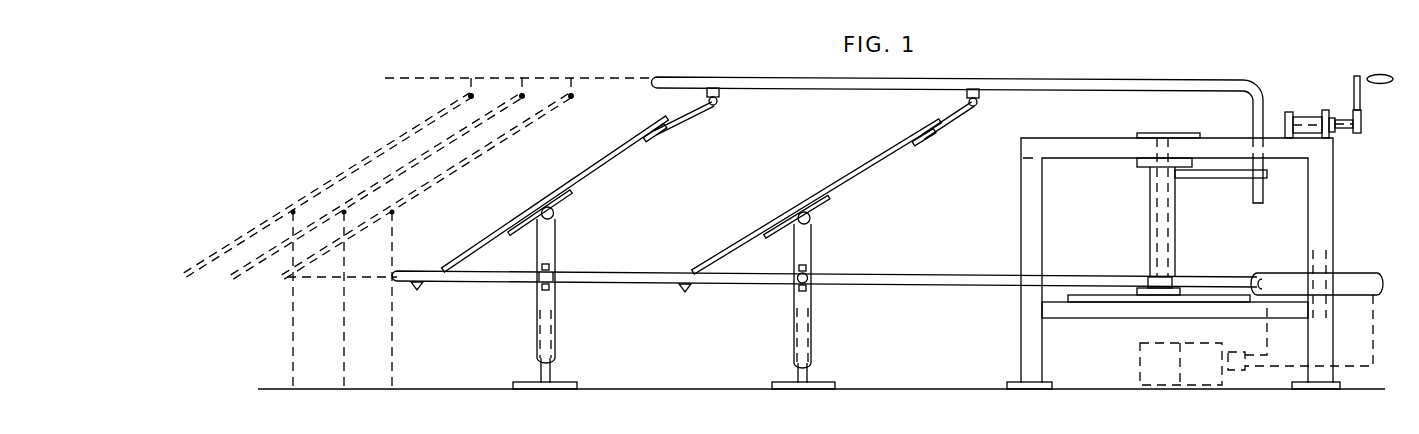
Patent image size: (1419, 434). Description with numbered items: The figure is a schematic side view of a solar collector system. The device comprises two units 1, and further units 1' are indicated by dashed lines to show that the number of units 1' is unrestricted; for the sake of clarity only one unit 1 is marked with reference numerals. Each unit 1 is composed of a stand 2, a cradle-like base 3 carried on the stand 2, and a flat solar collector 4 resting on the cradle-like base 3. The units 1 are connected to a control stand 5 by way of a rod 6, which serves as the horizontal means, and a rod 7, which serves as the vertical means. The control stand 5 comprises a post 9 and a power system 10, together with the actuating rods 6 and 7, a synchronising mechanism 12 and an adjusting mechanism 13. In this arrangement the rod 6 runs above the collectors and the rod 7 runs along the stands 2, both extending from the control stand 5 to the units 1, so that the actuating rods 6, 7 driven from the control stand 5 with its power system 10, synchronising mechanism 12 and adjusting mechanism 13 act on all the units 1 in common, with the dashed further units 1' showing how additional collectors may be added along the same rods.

The unit 1 is at (814, 306).
The further unit 1' is at (290, 306).
The stand 2 is at (810, 327).
The cradle-like base 3 is at (815, 218).
The flat solar collector 4 is at (758, 238).
The control stand 5 is at (1027, 340).
The rod 6 is at (1138, 84).
The rod 7 is at (897, 287).
The post 9 is at (1160, 372).
The power system 10 is at (1370, 293).
The synchronising mechanism 12 is at (1217, 139).
The adjusting mechanism 13 is at (1310, 115).